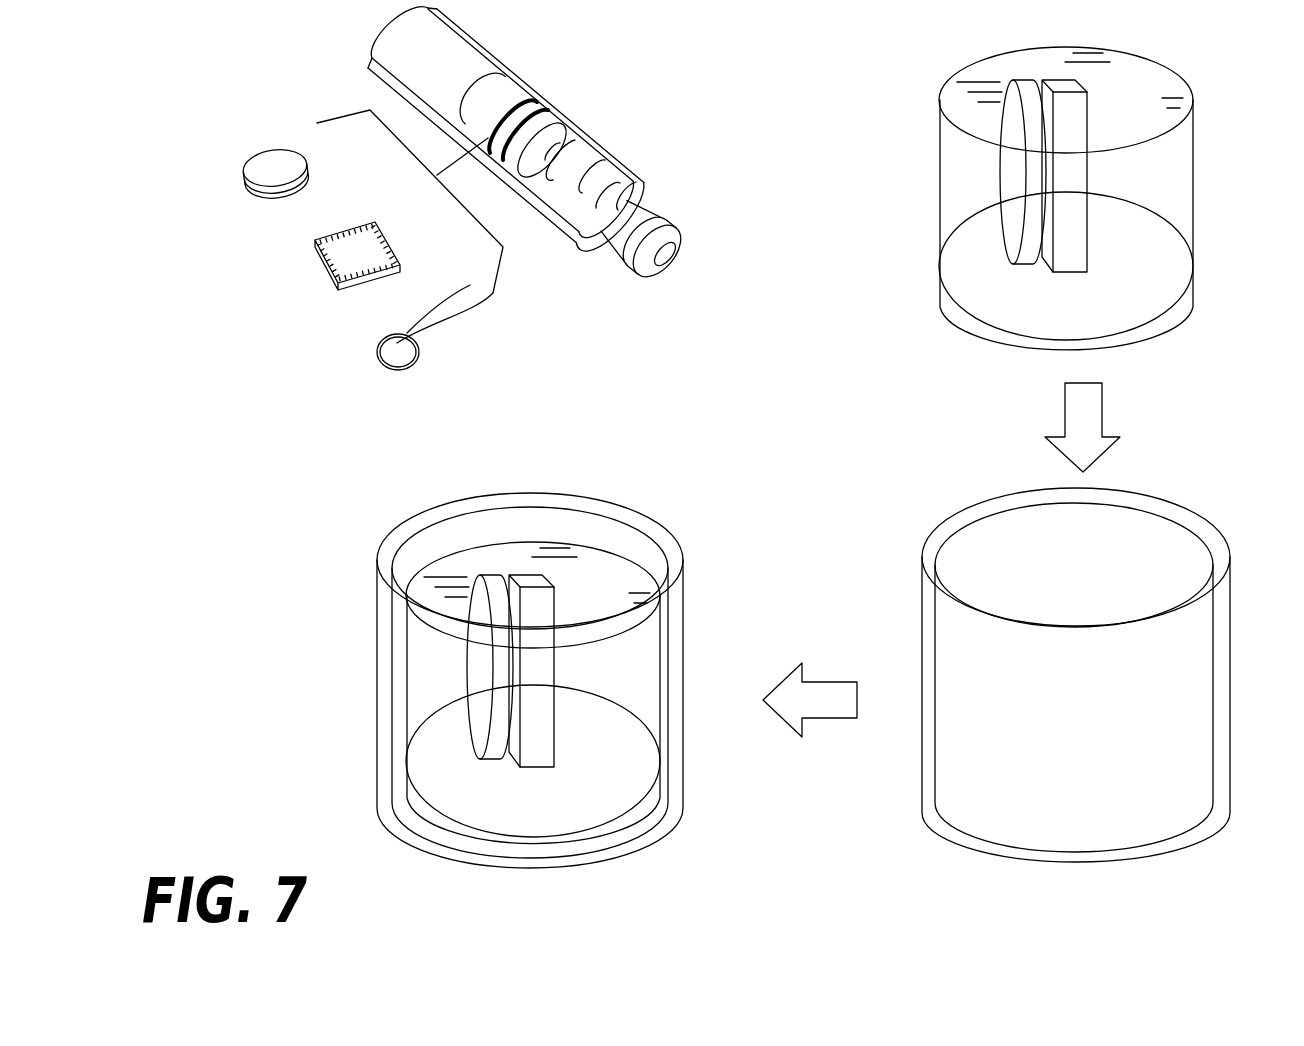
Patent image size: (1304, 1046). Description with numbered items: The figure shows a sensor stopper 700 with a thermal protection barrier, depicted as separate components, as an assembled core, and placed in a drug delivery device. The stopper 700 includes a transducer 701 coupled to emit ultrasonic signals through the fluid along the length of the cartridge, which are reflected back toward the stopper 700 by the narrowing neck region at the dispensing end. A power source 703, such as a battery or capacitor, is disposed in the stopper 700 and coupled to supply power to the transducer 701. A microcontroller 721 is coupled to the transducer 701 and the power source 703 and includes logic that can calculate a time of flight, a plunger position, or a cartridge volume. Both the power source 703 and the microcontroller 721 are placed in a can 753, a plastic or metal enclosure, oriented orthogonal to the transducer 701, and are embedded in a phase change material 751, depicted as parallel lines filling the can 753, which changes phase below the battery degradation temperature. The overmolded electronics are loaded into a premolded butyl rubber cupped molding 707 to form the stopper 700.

The sensor stopper 700 is at (507, 114).
The transducer 701 is at (387, 353).
The power source 703 is at (262, 165).
The molding 707 is at (537, 120).
The microcontroller 721 is at (330, 274).
The phase change material 751 is at (980, 78).
The can/housing 753 is at (1193, 207).